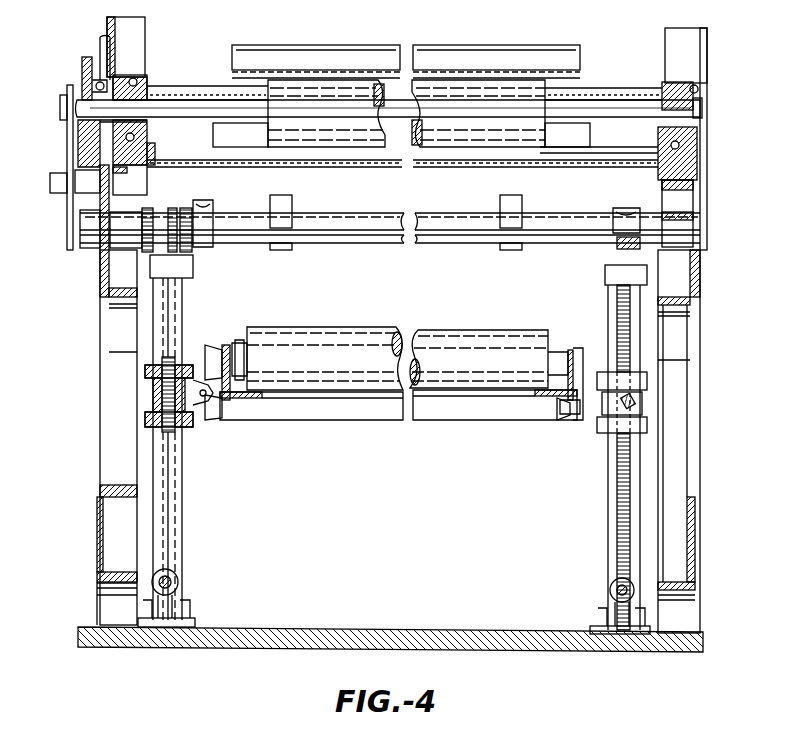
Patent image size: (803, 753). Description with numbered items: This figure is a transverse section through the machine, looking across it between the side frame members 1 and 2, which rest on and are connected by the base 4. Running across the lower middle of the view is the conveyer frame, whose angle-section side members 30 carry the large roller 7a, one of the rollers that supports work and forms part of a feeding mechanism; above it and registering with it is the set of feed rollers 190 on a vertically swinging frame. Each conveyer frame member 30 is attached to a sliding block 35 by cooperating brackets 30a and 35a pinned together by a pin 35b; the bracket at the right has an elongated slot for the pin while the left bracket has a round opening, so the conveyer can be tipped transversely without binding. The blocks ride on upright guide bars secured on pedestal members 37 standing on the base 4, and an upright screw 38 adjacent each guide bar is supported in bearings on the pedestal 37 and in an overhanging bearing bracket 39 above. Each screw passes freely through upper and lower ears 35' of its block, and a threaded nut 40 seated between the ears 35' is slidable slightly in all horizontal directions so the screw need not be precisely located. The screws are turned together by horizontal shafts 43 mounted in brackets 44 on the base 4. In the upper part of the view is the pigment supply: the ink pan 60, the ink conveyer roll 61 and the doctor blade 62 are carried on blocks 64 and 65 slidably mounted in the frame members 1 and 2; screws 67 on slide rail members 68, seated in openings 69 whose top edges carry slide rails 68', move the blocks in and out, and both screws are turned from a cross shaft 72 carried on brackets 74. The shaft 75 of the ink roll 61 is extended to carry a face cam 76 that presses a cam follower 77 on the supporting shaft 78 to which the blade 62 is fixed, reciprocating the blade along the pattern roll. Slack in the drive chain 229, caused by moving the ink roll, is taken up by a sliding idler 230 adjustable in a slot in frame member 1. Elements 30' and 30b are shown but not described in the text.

The side frame member 1 is at (108, 327).
The side frame member 2 is at (698, 305).
The base 4 is at (387, 632).
The large roller 7a is at (397, 358).
The side frame member of conveyer 30 is at (402, 428).
The support bracket piece 30' is at (575, 425).
The bracket 30a is at (239, 340).
The right bracket 30b is at (600, 344).
The sliding block 35 is at (440, 376).
The ear 35' is at (415, 399).
The bracket 35a is at (208, 347).
The pin 35b is at (218, 420).
The pedestal member 37 is at (193, 622).
The upright screw 38 is at (168, 357).
The overhanging bearing bracket 39 is at (193, 270).
The threaded nut 40 is at (196, 420).
The horizontal shaft 43 is at (178, 578).
The bracket 44 is at (173, 604).
The ink pan 60 is at (598, 165).
The ink conveyer roll 61 is at (406, 113).
The doctor blade 62 is at (406, 61).
The block 64 is at (137, 77).
The block 65 is at (703, 108).
The screw 67 is at (148, 134).
The slide rail member 68 is at (429, 200).
The slide rail 68' is at (433, 69).
The opening 69 is at (700, 90).
The cross shaft 72 is at (632, 150).
The bracket 74 is at (100, 37).
The shaft of ink roll 75 is at (191, 107).
The face cam 76 is at (85, 57).
The cam follower 77 is at (84, 80).
The supporting shaft 78 is at (590, 97).
The feed rollers 190 is at (293, 197).
The chain 229 is at (67, 158).
The sliding idler 230 is at (56, 176).